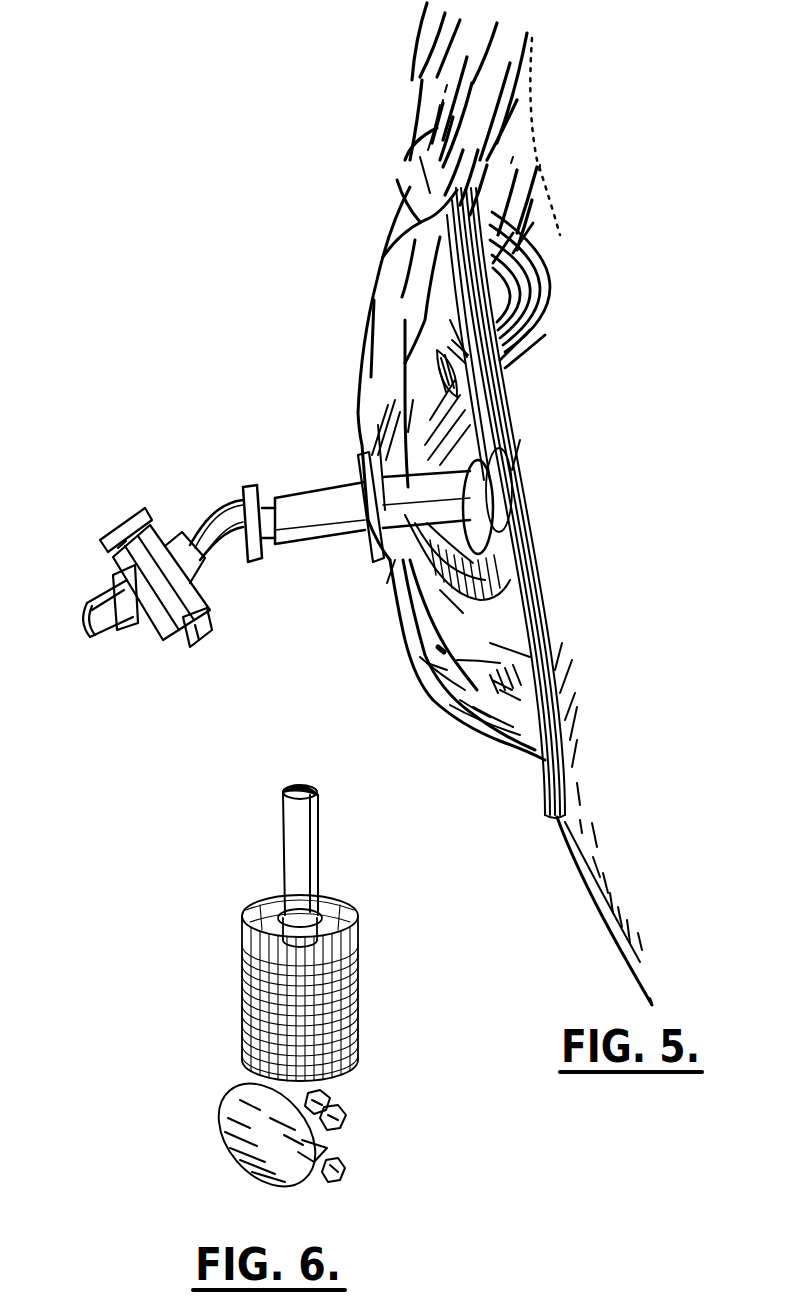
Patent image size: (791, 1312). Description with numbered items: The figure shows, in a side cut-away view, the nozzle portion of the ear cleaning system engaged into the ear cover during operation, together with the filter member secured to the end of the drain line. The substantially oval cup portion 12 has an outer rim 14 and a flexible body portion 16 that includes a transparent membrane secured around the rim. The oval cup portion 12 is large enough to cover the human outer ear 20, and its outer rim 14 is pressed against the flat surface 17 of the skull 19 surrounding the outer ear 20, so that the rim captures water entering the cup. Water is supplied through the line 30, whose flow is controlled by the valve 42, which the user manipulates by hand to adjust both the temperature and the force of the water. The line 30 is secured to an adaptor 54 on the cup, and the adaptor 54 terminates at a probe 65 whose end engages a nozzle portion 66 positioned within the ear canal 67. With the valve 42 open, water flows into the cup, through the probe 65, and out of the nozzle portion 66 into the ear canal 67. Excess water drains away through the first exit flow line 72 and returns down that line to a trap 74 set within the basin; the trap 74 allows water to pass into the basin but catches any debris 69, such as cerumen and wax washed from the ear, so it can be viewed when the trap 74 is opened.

In FIG. 5, the oval cup portion 12 is at (430, 223).
In FIG. 5, the outer rim 14 is at (545, 767).
In FIG. 5, the flexible body portion 16 is at (372, 298).
In FIG. 5, the flat surface 17 is at (553, 293).
In FIG. 5, the skull 19 is at (641, 434).
In FIG. 5, the outer ear 20 is at (432, 382).
In FIG. 5, the line 30 is at (120, 620).
In FIG. 5, the valve 42 is at (157, 568).
In FIG. 5, the adaptor 54 is at (307, 513).
In FIG. 5, the probe 65 is at (372, 552).
In FIG. 5, the nozzle portion 66 is at (500, 478).
In FIG. 5, the ear canal 67 is at (527, 427).
In FIG. 6, the debris 69 is at (347, 1113).
In FIG. 6, the first exit flow line 72 is at (302, 852).
In FIG. 6, the trap 74 is at (243, 990).